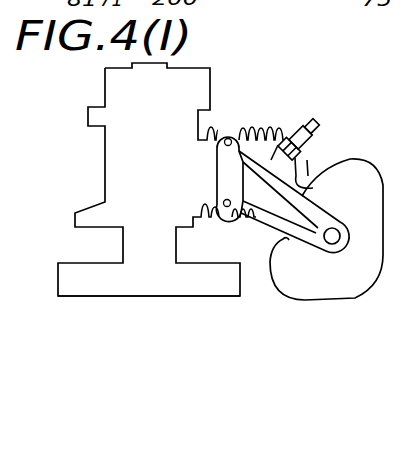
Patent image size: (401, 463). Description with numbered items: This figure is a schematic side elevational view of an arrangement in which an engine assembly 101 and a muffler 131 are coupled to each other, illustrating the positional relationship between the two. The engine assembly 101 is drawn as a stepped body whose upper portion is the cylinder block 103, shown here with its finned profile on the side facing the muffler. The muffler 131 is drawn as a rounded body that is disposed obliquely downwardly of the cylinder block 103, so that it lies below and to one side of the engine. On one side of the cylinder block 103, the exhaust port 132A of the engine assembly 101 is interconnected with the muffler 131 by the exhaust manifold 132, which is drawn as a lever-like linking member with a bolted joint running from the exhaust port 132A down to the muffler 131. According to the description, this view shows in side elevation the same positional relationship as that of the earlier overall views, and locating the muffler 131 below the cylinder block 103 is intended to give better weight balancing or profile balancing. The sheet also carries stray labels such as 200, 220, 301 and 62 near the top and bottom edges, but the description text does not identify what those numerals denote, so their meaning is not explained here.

The engine assembly 101 is at (110, 97).
The cylinder block 103 is at (258, 136).
The exhaust manifold 132 is at (321, 149).
The exhaust port 132A is at (220, 168).
The muffler 131 is at (366, 280).
The base 200 is at (100, 285).
The element of adjacent figure 220 is at (232, 21).
The element of adjacent figure 301 is at (316, 20).
The element of adjacent figure 62 is at (367, 20).